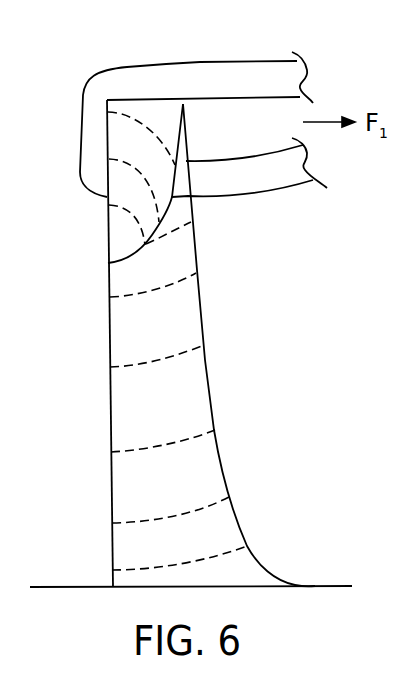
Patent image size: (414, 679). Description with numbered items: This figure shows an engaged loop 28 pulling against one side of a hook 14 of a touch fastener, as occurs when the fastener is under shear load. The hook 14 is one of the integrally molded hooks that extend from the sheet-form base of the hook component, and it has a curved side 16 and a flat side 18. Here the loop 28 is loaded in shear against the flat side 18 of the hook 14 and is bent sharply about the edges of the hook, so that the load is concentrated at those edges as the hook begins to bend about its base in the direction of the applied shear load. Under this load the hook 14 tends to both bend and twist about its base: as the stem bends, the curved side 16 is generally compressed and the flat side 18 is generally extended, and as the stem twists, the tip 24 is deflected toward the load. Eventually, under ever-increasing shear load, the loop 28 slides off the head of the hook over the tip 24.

The hook 14 is at (202, 343).
The curved side 16 is at (211, 393).
The flat side 18 is at (108, 406).
The distal tip 24 is at (76, 265).
The engaged loop 28 is at (221, 62).